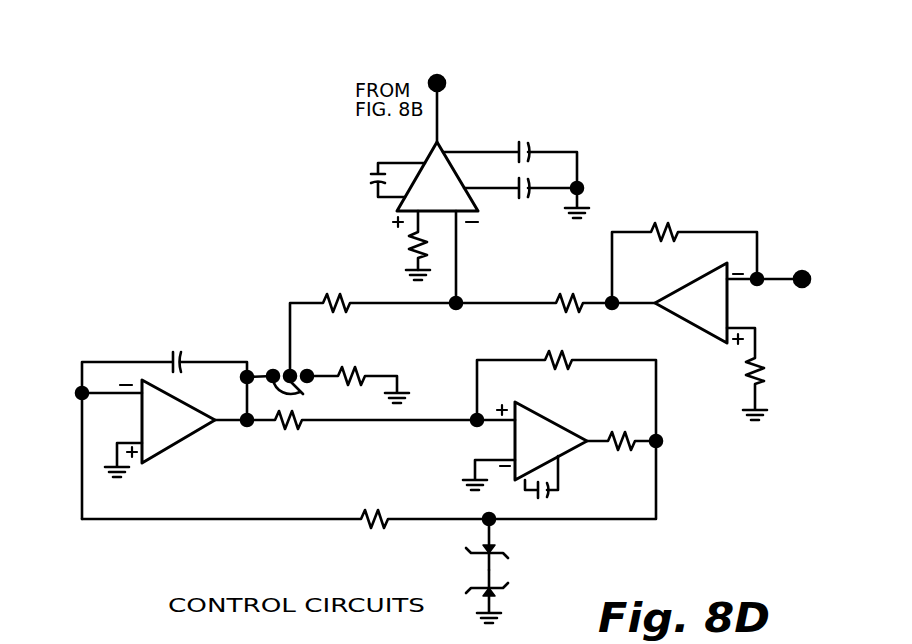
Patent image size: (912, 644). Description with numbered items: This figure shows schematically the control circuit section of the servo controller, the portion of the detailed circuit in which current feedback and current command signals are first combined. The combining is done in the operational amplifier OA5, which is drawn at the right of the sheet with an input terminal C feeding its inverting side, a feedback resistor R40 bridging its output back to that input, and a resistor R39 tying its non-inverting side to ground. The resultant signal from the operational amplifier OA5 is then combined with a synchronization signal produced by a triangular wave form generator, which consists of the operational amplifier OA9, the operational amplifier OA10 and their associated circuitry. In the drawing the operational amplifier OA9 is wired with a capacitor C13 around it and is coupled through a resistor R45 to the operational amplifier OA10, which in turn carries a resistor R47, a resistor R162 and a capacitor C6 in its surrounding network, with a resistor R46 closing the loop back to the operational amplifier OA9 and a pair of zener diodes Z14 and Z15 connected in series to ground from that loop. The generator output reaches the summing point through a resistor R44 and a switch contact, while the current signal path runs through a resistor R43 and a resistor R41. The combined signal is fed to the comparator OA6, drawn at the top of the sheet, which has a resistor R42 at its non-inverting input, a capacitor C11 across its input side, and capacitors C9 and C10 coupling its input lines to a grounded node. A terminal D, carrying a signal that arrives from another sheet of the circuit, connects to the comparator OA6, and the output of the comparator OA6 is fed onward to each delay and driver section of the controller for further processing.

The terminal D from FIG. 8B D is at (431, 75).
The input terminal C is at (806, 272).
The comparator OA6 is at (435, 184).
The operational amplifier OA5 is at (699, 303).
The operational amplifier OA9 is at (160, 428).
The operational amplifier OA10 is at (525, 446).
The capacitor C9 is at (518, 151).
The capacitor C10 is at (521, 192).
The capacitor C11 is at (372, 175).
The capacitor C13 is at (174, 356).
The capacitor C6 is at (542, 499).
The resistor R39 is at (766, 362).
The resistor R40 is at (665, 227).
The resistor R41 is at (571, 292).
The resistor R42 is at (412, 238).
The resistor R43 is at (331, 292).
The resistor R44 is at (358, 366).
The resistor R45 is at (300, 428).
The resistor R46 is at (367, 530).
The resistor R47 is at (570, 356).
The resistor R162 is at (620, 435).
The zener diode Z14 is at (504, 554).
The zener diode Z15 is at (504, 588).